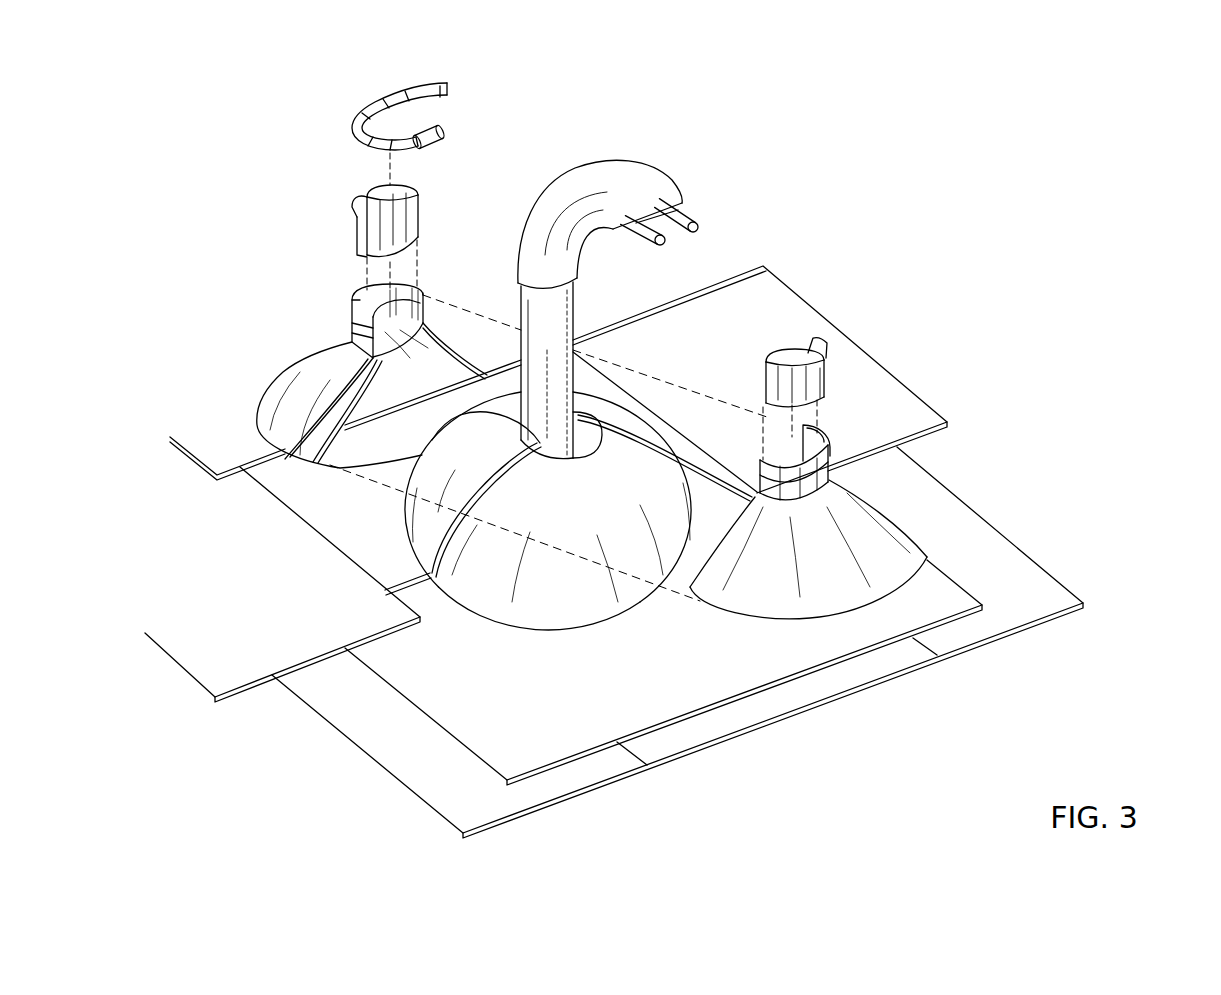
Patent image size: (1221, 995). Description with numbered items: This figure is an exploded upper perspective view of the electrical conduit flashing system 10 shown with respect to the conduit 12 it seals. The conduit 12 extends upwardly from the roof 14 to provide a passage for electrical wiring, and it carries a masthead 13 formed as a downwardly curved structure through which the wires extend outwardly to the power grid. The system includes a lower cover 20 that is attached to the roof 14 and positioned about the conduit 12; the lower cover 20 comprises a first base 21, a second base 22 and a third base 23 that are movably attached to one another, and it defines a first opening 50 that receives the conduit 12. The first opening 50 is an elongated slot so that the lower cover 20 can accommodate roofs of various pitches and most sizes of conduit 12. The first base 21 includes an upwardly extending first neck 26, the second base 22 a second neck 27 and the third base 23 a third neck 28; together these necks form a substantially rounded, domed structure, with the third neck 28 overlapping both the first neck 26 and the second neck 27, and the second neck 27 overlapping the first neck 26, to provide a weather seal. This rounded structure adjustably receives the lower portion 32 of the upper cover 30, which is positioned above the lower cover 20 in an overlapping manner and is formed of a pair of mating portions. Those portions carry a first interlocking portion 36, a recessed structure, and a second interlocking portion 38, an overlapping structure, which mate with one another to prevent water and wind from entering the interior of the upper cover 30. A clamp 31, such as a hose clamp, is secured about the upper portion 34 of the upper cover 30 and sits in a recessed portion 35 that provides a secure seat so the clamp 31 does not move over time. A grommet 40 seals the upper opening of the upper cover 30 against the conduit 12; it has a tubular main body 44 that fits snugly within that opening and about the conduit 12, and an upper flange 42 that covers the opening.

The electrical conduit flashing system 10 is at (1000, 157).
The conduit 12 is at (520, 293).
The masthead 13 is at (655, 168).
The roof 14 is at (283, 482).
The lower cover 20 is at (660, 624).
The first base 21 is at (850, 638).
The second base 22 is at (633, 717).
The third base 23 is at (388, 566).
The first neck 26 is at (647, 467).
The second neck 27 is at (495, 588).
The third neck 28 is at (404, 528).
The upper cover 30 is at (629, 388).
The clamp 31 is at (352, 122).
The lower portion 32 is at (267, 409).
The upper portion 34 is at (587, 373).
The recessed portion 35 is at (352, 317).
The first interlocking portion 36 is at (351, 324).
The second interlocking portion 38 is at (420, 275).
The grommet 40 is at (617, 297).
The upper flange 42 is at (354, 195).
The main body 44 is at (357, 252).
The first opening 50 is at (588, 457).